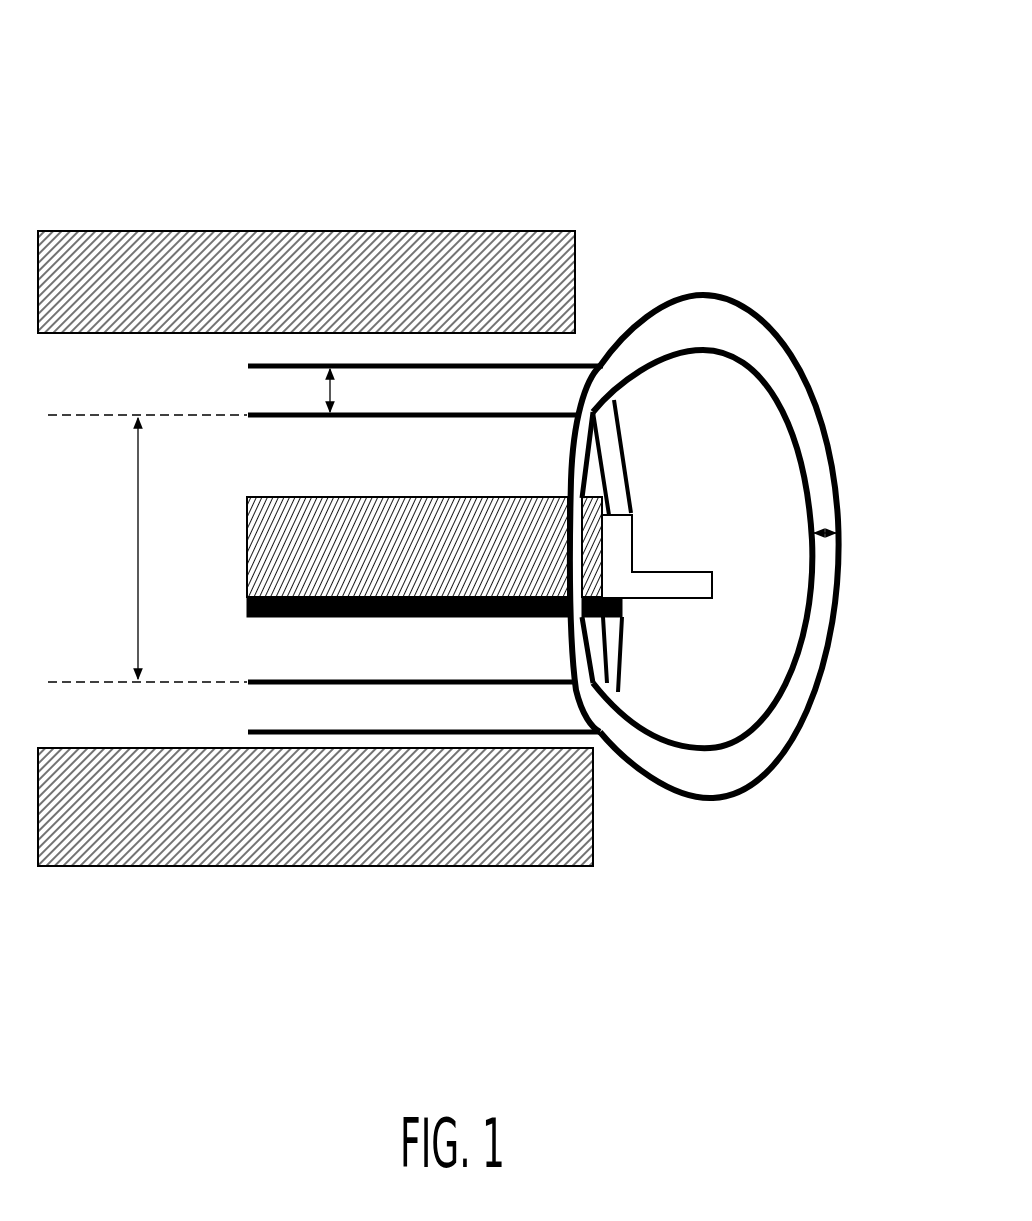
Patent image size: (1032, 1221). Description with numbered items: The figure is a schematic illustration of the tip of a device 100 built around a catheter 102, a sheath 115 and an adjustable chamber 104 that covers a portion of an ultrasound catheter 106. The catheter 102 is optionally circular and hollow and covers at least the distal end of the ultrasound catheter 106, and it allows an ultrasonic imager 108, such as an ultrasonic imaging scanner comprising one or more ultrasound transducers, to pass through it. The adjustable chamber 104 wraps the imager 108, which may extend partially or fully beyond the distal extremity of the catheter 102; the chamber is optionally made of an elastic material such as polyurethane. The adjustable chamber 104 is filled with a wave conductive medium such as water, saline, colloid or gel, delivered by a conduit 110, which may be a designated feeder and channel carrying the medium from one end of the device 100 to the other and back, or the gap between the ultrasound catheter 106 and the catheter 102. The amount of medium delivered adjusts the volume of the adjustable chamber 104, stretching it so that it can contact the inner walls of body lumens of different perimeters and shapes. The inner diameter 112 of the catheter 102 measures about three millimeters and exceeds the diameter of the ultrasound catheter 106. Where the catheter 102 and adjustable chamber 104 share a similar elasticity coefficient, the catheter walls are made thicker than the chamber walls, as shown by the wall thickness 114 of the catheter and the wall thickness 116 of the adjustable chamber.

The device 100 is at (230, 158).
The catheter 102 is at (455, 344).
The adjustable chamber 104 is at (672, 274).
The ultrasound catheter 106 is at (419, 477).
The ultrasonic imager 108 is at (682, 640).
The conduit 110 is at (409, 640).
The inner diameter 112 is at (132, 512).
The wall thickness 114 is at (328, 380).
The sheath 115 is at (138, 245).
The wall thickness of the adjustable chamber 116 is at (823, 528).